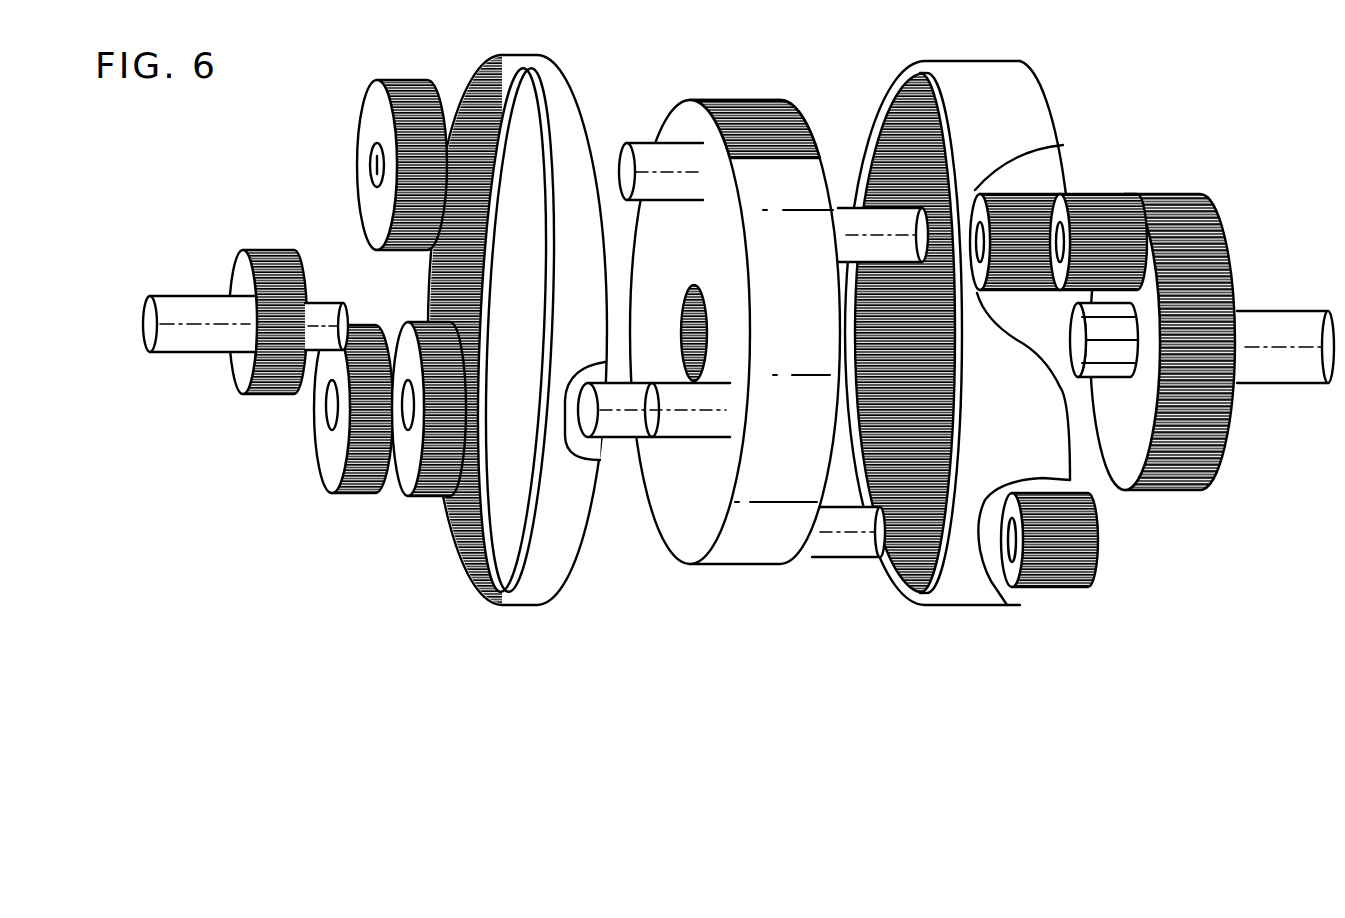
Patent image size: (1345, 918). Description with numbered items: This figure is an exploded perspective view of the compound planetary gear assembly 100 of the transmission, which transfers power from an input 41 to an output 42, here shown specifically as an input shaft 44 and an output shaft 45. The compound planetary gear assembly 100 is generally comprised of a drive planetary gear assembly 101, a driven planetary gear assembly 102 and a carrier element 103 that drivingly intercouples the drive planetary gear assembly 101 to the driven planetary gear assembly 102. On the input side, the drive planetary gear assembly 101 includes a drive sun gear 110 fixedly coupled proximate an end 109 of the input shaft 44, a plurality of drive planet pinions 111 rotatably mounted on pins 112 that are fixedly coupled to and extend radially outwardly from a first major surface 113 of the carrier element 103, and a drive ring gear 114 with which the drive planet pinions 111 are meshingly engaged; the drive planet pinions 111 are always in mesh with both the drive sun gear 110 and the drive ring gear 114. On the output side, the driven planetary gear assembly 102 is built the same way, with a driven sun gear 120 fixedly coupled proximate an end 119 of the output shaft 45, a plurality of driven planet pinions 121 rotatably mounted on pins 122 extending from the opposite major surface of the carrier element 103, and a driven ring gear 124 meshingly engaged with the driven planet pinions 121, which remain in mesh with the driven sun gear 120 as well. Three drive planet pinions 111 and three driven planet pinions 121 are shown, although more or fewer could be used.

The input 41 is at (198, 368).
The output 42 is at (1285, 361).
The input shaft 44 is at (154, 360).
The output shaft 45 is at (1266, 327).
The compound planetary gear assembly 100 is at (737, 369).
The drive planetary gear assembly 101 is at (544, 364).
The driven planetary gear assembly 102 is at (1011, 621).
The carrier element 103 is at (702, 385).
The end of input shaft 109 is at (347, 320).
The drive sun gear 110 is at (240, 397).
The drive planet pinions 111 is at (362, 130).
The pins 112 is at (648, 158).
The first major surface 113 is at (712, 236).
The drive ring gear 114 is at (553, 100).
The end of output shaft 119 is at (1078, 352).
The driven sun gear 120 is at (1234, 252).
The driven planet pinions 121 is at (1062, 190).
The pins 122 is at (872, 230).
The driven ring gear 124 is at (1000, 97).